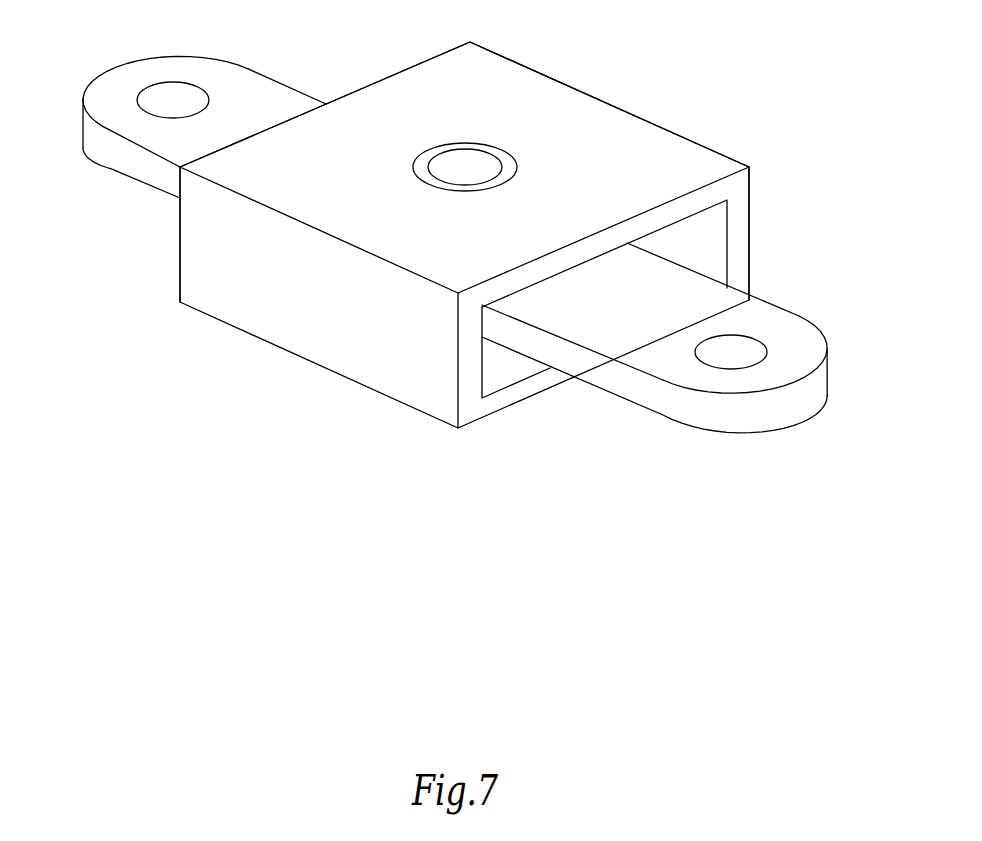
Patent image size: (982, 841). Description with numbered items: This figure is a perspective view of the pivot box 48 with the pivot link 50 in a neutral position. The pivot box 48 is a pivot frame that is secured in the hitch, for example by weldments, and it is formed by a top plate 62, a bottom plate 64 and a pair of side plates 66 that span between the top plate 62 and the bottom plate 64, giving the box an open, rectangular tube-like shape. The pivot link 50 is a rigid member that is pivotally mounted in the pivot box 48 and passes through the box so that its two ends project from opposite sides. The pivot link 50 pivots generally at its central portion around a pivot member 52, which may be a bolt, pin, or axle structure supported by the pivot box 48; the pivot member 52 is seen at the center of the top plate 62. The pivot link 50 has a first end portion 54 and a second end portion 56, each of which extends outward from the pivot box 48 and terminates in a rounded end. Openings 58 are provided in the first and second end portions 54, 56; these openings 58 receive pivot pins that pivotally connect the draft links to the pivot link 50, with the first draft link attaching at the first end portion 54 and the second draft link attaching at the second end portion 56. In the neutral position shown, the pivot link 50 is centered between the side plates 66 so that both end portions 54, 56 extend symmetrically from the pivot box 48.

The pivot box 48 is at (620, 123).
The pivot link 50 is at (250, 85).
The pivot member 52 is at (457, 153).
The first end portion 54 is at (800, 338).
The second end portion 56 is at (117, 86).
The openings 58 is at (747, 335).
The top plate 62 is at (535, 88).
The bottom plate 64 is at (517, 395).
The side plates 66 is at (740, 208).